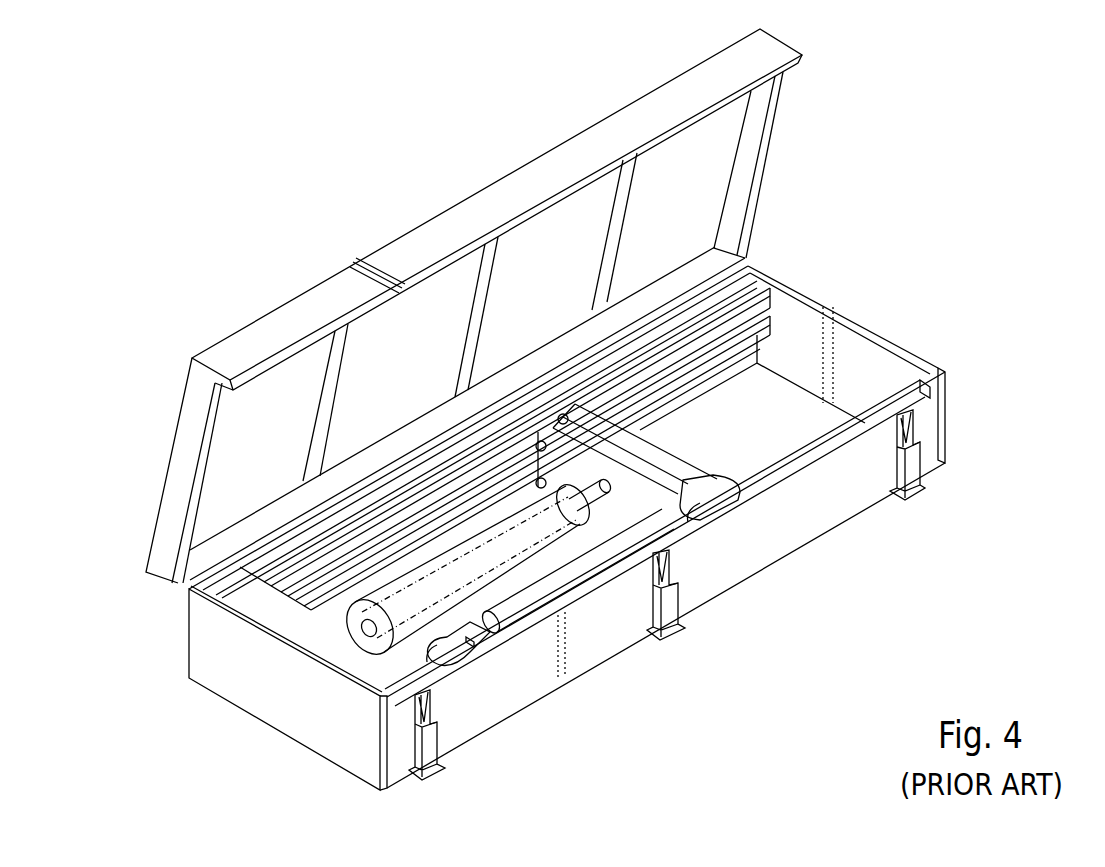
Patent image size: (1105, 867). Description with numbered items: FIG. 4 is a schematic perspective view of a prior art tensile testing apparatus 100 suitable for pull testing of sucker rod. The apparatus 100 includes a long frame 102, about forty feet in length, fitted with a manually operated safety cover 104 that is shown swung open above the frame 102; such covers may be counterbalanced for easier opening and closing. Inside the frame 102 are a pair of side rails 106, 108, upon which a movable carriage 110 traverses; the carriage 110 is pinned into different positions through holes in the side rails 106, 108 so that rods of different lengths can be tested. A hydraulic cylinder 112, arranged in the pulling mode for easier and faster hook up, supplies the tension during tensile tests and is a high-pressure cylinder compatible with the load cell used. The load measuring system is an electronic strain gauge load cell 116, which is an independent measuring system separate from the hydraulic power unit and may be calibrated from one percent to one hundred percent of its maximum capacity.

The testing apparatus 100 is at (822, 158).
The frame 102 is at (845, 498).
The safety cover 104 is at (557, 170).
The side rail 106 is at (757, 297).
The side rail 108 is at (903, 393).
The movable carriage 110 is at (667, 465).
The hydraulic cylinder 112 is at (478, 556).
The load cell 116 is at (717, 498).